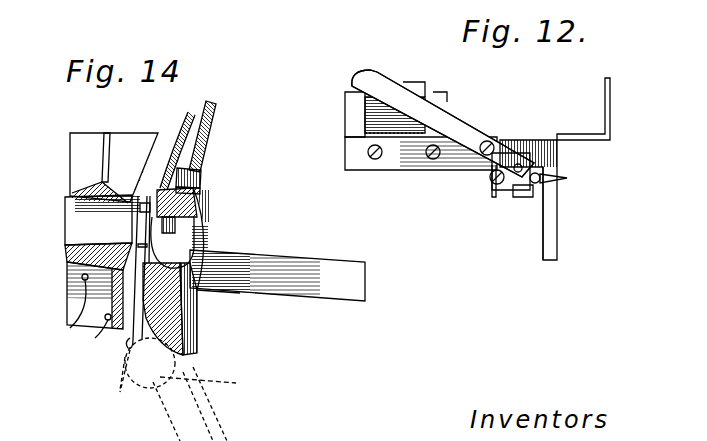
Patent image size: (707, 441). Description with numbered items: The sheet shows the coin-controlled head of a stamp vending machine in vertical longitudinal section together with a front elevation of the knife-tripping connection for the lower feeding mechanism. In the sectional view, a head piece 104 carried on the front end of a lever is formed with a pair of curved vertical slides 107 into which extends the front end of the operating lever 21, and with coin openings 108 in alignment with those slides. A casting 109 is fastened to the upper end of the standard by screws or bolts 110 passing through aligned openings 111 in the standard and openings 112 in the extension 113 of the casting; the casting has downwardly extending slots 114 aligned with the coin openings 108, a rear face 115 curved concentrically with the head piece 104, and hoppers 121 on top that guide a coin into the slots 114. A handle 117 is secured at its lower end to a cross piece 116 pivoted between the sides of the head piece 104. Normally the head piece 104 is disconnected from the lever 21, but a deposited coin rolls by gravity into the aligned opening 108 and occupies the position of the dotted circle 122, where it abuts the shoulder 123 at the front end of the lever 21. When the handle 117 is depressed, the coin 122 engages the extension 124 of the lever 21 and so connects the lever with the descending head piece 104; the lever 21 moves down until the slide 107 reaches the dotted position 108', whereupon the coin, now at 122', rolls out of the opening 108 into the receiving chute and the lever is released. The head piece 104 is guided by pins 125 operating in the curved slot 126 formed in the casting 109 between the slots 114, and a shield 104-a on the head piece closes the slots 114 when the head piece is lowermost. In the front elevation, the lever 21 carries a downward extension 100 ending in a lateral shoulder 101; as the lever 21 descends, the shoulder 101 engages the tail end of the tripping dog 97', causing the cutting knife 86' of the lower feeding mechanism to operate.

In FIG. 14, the lever 21 is at (348, 263).
In FIG. 12, the cutting knife 86' is at (443, 123).
In FIG. 12, the tripping dog 97' is at (516, 201).
In FIG. 12, the downward extension 100 is at (607, 80).
In FIG. 12, the lateral shoulder 101 is at (588, 138).
In FIG. 14, the head piece 104 is at (198, 318).
In FIG. 14, the shield 104-a is at (212, 130).
In FIG. 14, the vertical slides 107 is at (210, 193).
In FIG. 14, the coin openings 108 is at (208, 212).
In FIG. 14, the dotted lines indicating lowered slot position 108' is at (220, 385).
In FIG. 14, the casting 109 is at (68, 254).
In FIG. 14, the screws or bolts 110 is at (82, 277).
In FIG. 14, the openings in standard 111 is at (70, 318).
In FIG. 14, the openings in extension 112 is at (80, 332).
In FIG. 14, the extension of casting 113 is at (78, 290).
In FIG. 14, the slots 114 is at (78, 233).
In FIG. 14, the rear face 115 is at (127, 357).
In FIG. 14, the cross piece 116 is at (193, 194).
In FIG. 14, the handle 117 is at (212, 104).
In FIG. 14, the hoppers 121 is at (91, 136).
In FIG. 14, the coin 122 is at (205, 242).
In FIG. 14, the coin in released position 122' is at (107, 382).
In FIG. 14, the shoulder 123 is at (198, 264).
In FIG. 14, the extension of lever 124 is at (208, 294).
In FIG. 14, the pins 125 is at (140, 200).
In FIG. 14, the curved slot 126 is at (146, 196).